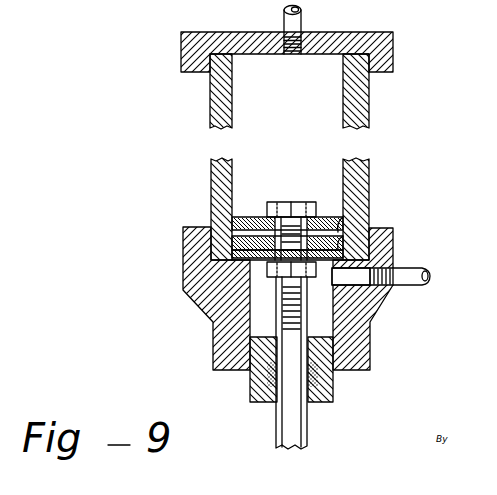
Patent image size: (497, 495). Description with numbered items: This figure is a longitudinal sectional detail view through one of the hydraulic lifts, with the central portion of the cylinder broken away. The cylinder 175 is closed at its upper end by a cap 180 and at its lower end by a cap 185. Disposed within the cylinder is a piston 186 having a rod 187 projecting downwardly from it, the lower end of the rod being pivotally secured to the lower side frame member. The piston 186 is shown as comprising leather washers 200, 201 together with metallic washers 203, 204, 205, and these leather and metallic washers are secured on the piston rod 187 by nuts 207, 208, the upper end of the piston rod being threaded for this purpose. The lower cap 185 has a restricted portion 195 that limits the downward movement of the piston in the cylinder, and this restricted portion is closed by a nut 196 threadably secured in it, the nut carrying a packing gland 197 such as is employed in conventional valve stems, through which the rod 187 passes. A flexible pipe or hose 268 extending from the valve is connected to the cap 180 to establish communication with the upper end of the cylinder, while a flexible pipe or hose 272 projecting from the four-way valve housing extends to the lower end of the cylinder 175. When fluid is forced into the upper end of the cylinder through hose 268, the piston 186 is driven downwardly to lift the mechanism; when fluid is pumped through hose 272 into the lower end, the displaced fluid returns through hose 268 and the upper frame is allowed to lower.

The cylinder 175 is at (366, 110).
The cap 180 is at (394, 50).
The cap 185 is at (392, 246).
The piston 186 is at (257, 208).
The rod 187 is at (317, 364).
The restricted portion 195 is at (309, 308).
The nut 196 is at (250, 381).
The packing gland 197 is at (333, 398).
The leather washer 200 is at (343, 217).
The leather washer 201 is at (343, 240).
The metallic washer 203 is at (212, 203).
The metallic washer 204 is at (212, 221).
The metallic washer 205 is at (262, 272).
The nut 207 is at (303, 202).
The nut 208 is at (351, 276).
The flexible pipe or hose 268 is at (302, 22).
The flexible pipe or hose 272 is at (392, 288).